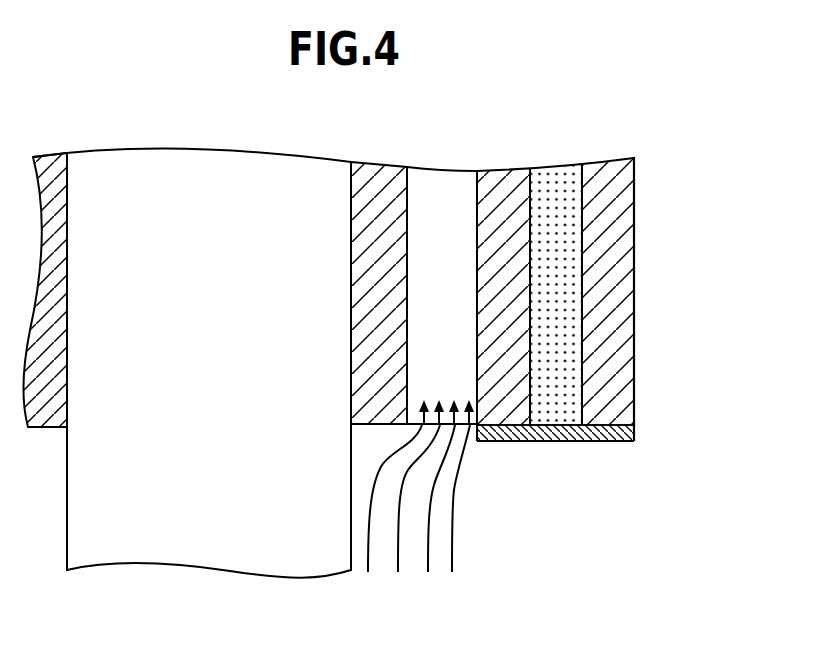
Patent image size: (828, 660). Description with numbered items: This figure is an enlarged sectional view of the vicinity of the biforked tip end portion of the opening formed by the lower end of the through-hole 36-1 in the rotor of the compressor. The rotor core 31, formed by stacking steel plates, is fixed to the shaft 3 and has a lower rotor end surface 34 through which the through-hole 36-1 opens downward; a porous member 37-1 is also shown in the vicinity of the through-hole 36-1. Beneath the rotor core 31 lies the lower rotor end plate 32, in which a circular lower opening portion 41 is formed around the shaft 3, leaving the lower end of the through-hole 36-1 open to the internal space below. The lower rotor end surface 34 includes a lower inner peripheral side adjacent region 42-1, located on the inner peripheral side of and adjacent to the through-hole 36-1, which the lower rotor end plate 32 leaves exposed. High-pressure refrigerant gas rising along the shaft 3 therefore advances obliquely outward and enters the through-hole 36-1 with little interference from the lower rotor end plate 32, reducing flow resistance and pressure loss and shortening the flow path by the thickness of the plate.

The shaft 3 is at (242, 552).
The lower inner peripheral side adjacent region 42-1 is at (385, 428).
The through-hole 36-1 is at (457, 298).
The porous member 37-1 is at (557, 268).
The rotor core 31 is at (634, 363).
The lower rotor end plate 32 is at (560, 441).
The lower rotor end surface 34 is at (608, 441).
The lower opening portion 41 is at (468, 428).